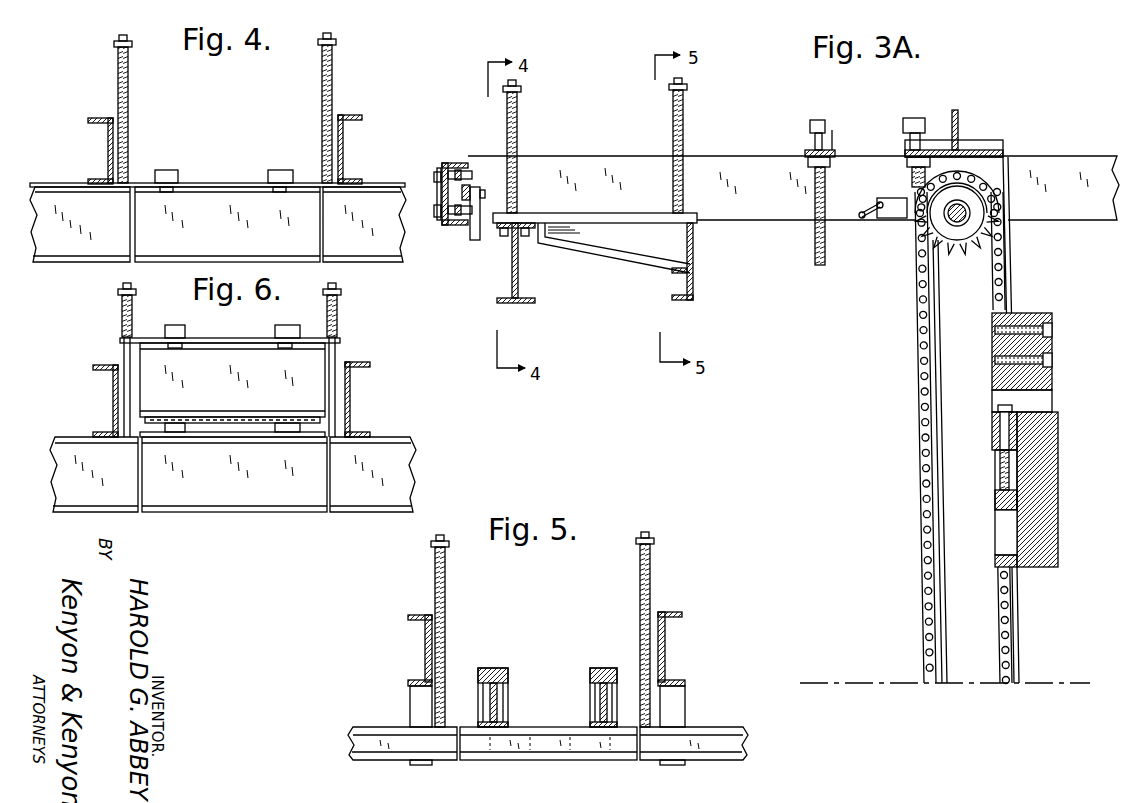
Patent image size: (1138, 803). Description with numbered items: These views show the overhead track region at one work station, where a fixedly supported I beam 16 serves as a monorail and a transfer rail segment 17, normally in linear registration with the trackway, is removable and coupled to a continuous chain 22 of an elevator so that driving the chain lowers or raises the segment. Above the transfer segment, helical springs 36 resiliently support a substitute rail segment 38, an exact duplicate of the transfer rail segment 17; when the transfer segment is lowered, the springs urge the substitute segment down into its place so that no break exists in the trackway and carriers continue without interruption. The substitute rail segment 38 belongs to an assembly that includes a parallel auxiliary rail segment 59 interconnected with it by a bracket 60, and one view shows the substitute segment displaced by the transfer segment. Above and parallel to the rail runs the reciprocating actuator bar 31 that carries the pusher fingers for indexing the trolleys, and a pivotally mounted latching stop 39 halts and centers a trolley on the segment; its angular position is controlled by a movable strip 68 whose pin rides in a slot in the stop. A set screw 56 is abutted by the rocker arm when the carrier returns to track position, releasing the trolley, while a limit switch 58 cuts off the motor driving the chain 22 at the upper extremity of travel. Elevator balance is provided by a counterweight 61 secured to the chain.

In FIG. 4, the I beam 16 is at (392, 255).
In FIG. 6, the I beam 16 is at (66, 446).
In FIG. 6, the transfer rail segment 17 is at (220, 500).
In FIG. 3A, the continuous chain 22 is at (916, 425).
In FIG. 3A, the actuator bar 31 is at (438, 200).
In FIG. 4, the helical springs 36 is at (130, 70).
In FIG. 6, the helical springs 36 is at (120, 314).
In FIG. 5, the helical springs 36 is at (447, 580).
In FIG. 3A, the helical springs 36 is at (518, 122).
In FIG. 4, the substitute rail segment 38 is at (228, 188).
In FIG. 6, the substitute rail segment 38 is at (228, 351).
In FIG. 3A, the substitute rail segment 38 is at (512, 265).
In FIG. 3A, the latching stop 39 is at (478, 236).
In FIG. 3A, the set screw 56 is at (818, 252).
In FIG. 3A, the limit switch 58 is at (863, 218).
In FIG. 5, the auxiliary rail segment 59 is at (545, 758).
In FIG. 3A, the auxiliary rail segment 59 is at (692, 280).
In FIG. 4, the bracket 60 is at (168, 170).
In FIG. 6, the bracket 60 is at (173, 333).
In FIG. 5, the bracket 60 is at (590, 670).
In FIG. 3A, the bracket 60 is at (615, 248).
In FIG. 3A, the counterweight 61 is at (1050, 441).
In FIG. 3A, the movable strip 68 is at (470, 186).